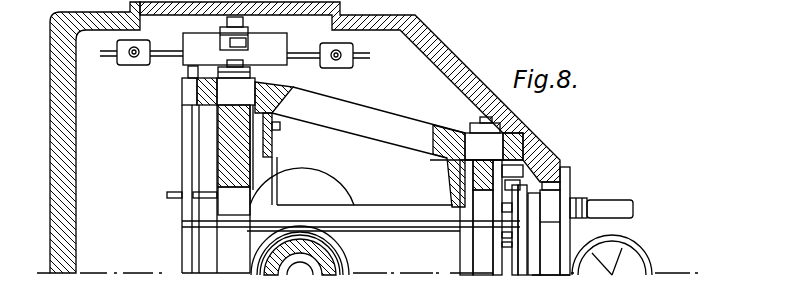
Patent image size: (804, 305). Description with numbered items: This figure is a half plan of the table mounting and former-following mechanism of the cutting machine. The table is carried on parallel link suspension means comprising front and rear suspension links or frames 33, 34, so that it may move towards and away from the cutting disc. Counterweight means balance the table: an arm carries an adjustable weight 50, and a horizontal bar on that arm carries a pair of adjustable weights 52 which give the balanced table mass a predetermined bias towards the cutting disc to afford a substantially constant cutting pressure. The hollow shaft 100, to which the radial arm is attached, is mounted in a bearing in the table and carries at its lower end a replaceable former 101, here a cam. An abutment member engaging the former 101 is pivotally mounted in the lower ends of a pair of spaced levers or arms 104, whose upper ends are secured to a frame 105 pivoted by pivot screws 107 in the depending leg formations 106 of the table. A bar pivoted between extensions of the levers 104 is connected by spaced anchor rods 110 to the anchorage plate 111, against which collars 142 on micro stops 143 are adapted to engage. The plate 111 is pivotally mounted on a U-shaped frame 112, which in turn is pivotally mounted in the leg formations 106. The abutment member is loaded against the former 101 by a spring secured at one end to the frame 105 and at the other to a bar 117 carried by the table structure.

The front suspension link or frame 33 is at (483, 217).
The rear suspension link or frame 34 is at (234, 201).
The adjustable weight 50 is at (235, 47).
The adjustable weights 52 is at (123, 58).
The hollow shaft 100 is at (307, 263).
The replaceable former 101 is at (332, 188).
The levers or arms 104 is at (212, 192).
The frame 105 is at (185, 210).
The depending leg formations 106 is at (280, 110).
The pivot screws 107 is at (188, 70).
The anchor rods 110 is at (398, 226).
The anchorage plate 111 is at (522, 262).
The U-shaped frame 112 is at (530, 187).
The bar 117 is at (277, 170).
The collars 142 is at (508, 198).
The micro stops 143 is at (592, 202).